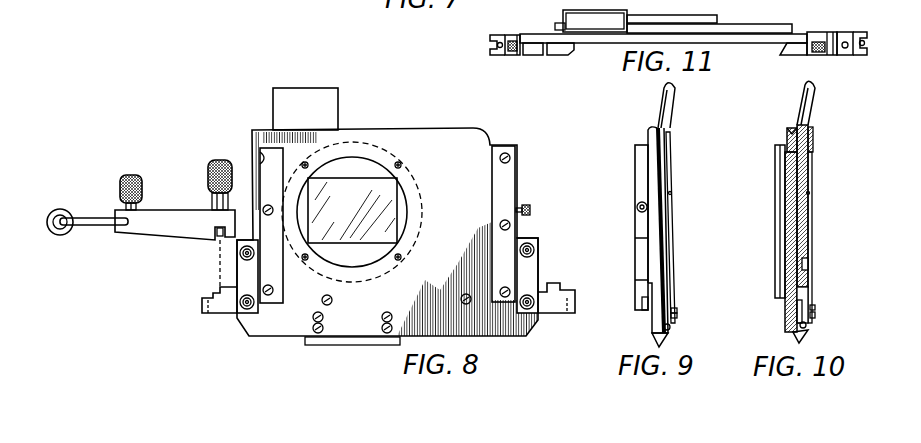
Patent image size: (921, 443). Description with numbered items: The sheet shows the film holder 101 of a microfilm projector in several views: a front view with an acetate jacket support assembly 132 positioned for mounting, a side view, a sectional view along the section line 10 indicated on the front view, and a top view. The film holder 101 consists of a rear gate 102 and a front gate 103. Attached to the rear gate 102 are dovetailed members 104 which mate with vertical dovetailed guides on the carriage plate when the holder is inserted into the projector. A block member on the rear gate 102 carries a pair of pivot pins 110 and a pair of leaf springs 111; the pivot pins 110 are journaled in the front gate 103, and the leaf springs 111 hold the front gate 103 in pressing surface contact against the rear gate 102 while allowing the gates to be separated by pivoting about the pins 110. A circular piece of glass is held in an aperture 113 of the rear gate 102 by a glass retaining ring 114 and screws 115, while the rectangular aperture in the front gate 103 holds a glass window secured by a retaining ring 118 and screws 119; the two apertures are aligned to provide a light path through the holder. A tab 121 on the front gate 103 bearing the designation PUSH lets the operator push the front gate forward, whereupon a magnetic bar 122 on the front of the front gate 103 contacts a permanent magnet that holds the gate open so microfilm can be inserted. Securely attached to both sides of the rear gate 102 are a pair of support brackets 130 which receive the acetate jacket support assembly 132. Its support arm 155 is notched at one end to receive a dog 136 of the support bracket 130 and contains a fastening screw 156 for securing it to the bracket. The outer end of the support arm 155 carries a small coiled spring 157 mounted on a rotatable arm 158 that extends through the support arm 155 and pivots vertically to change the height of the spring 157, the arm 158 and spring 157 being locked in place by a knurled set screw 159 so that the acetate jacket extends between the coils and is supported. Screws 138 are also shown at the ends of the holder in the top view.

In FIG. 8, the projector lens 10 is at (352, 88).
In FIG. 8, the film holder 101 is at (422, 114).
In FIG. 11, the rear gate 102 is at (803, 33).
In FIG. 11, the front gate 103 is at (740, 24).
In FIG. 8, the dovetailed members 104 is at (263, 149).
In FIG. 9, the dovetailed members 104 is at (636, 187).
In FIG. 11, the dovetailed members 104 is at (567, 55).
In FIG. 9, the pivot pins 110 is at (670, 327).
In FIG. 10, the pivot pins 110 is at (806, 326).
In FIG. 9, the leaf springs 111 is at (672, 215).
In FIG. 10, the leaf springs 111 is at (812, 215).
In FIG. 8, the aperture 113 is at (390, 160).
In FIG. 8, the glass retaining ring 114 is at (365, 138).
In FIG. 10, the glass retaining ring 114 is at (790, 279).
In FIG. 8, the screws 115 is at (405, 256).
In FIG. 10, the screws 115 is at (787, 142).
In FIG. 10, the retaining ring 118 is at (810, 251).
In FIG. 10, the screws 119 is at (807, 264).
In FIG. 8, the tab 121 is at (302, 88).
In FIG. 11, the tab 121 is at (596, 11).
In FIG. 11, the magnetic bar 122 is at (672, 11).
In FIG. 8, the support brackets 130 is at (232, 320).
In FIG. 8, the acetate jacket support assembly 132 is at (125, 210).
In FIG. 8, the dog 136 is at (213, 289).
In FIG. 11, the dog 136 is at (497, 35).
In FIG. 11, the fastening screw 138 is at (490, 47).
In FIG. 8, the support arm 155 is at (170, 210).
In FIG. 8, the fastening screw 156 is at (208, 168).
In FIG. 8, the coiled spring 157 is at (46, 222).
In FIG. 8, the rotatable arm 158 is at (80, 216).
In FIG. 8, the knurled set screw 159 is at (143, 188).